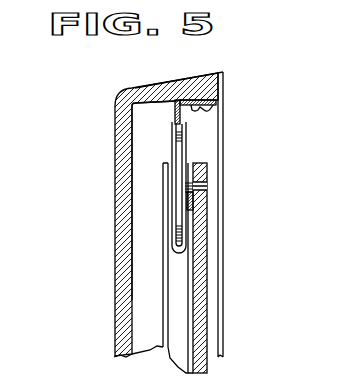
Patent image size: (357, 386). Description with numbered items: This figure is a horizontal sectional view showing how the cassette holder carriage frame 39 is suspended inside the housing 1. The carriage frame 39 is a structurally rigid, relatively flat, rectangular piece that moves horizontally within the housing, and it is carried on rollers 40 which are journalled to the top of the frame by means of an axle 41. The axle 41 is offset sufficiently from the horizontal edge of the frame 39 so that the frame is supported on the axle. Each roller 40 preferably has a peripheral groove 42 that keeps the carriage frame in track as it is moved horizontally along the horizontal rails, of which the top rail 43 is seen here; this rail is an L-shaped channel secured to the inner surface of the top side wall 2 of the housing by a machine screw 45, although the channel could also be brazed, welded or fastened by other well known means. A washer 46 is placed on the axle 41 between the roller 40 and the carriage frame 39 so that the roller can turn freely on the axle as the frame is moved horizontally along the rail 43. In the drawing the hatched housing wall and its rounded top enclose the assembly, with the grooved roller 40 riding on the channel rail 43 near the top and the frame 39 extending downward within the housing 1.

The housing 1 is at (122, 162).
The top side wall 2 is at (224, 76).
The cassette holder carriage frame 39 is at (205, 308).
The roller 40 is at (186, 131).
The axle 41 is at (208, 192).
The peripheral groove 42 is at (178, 251).
The top rail 43 is at (123, 122).
The machine screw 45 is at (214, 106).
The washer 46 is at (189, 165).